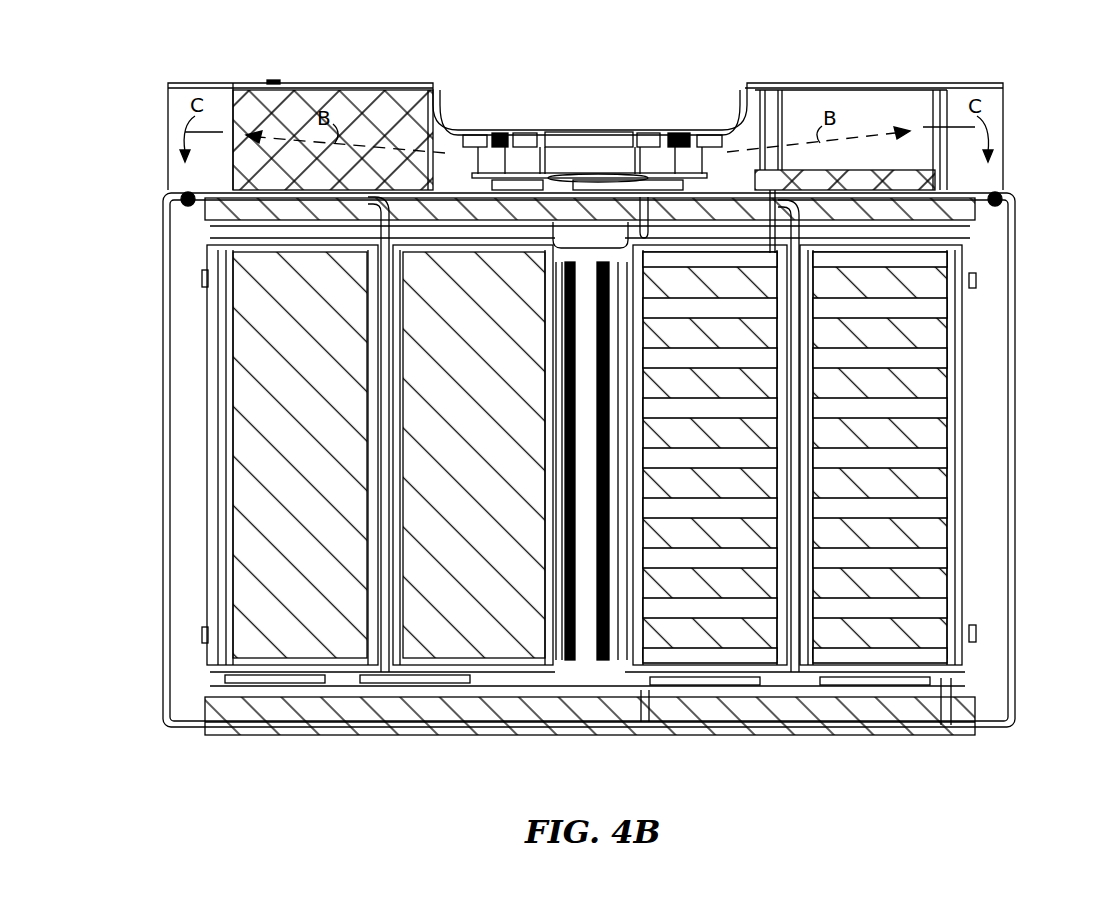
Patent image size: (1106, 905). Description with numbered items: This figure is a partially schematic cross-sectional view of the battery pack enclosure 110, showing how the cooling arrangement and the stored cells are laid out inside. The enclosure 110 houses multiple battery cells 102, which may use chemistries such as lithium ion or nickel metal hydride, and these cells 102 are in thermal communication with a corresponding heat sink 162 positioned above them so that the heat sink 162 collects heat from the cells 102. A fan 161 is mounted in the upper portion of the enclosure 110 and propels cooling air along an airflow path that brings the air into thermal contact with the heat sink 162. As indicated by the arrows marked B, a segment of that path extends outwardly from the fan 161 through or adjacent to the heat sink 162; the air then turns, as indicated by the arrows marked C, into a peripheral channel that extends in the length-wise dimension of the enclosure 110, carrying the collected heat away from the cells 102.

The enclosure 110 is at (1015, 427).
The battery cell 102 is at (263, 570).
The fan 161 is at (593, 160).
The heat sink 162 is at (300, 100).